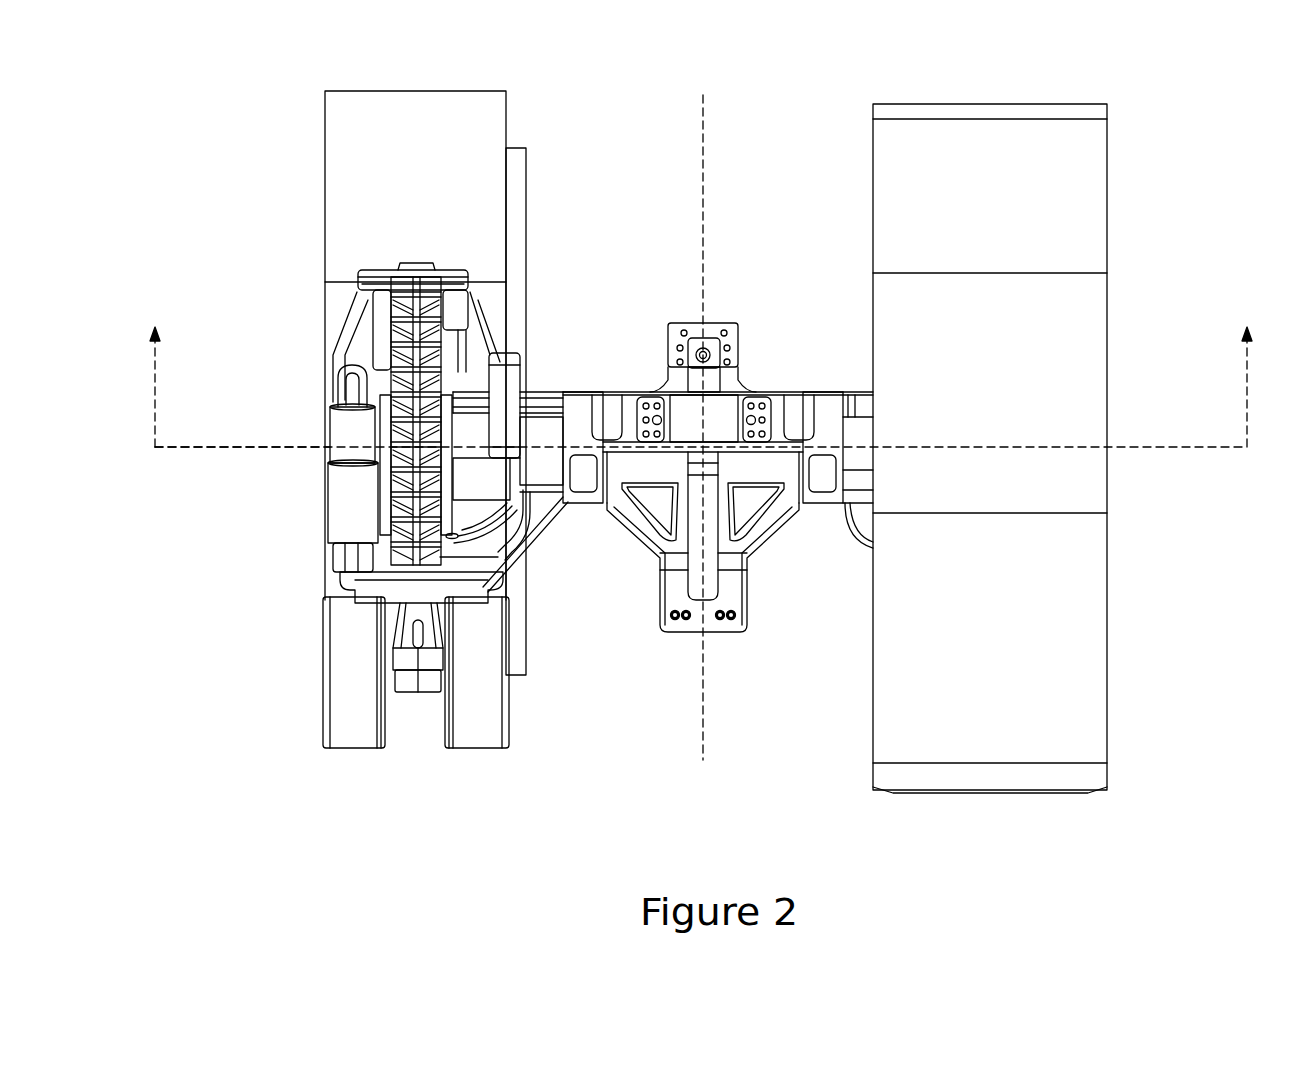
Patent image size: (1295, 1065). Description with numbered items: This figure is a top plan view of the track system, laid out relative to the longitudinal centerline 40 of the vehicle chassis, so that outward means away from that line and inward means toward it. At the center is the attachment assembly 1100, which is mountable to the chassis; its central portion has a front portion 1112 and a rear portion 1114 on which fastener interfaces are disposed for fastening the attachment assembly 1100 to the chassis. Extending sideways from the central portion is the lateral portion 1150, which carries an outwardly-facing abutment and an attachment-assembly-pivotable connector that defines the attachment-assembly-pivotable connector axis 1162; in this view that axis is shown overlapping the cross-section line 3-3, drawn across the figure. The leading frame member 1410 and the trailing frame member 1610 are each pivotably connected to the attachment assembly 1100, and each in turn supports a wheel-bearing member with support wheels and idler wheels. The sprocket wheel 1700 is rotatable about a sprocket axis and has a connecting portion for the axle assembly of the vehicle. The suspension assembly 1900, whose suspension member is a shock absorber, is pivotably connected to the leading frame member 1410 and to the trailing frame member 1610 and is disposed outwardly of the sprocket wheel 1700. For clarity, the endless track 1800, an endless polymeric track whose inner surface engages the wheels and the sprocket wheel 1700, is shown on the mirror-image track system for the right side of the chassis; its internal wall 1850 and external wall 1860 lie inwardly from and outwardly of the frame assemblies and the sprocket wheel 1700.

The cross-section line 3- 3 is at (701, 375).
The longitudinal centerline 40 is at (704, 128).
The attachment assembly 1100 is at (698, 633).
The front portion 1112 is at (660, 352).
The rear portion 1114 is at (660, 568).
The lateral portion 1150 is at (578, 392).
The attachment-assembly-pivotable connector axis 1162 is at (200, 446).
The leading frame member 1410 is at (467, 348).
The trailing frame member 1610 is at (525, 487).
The sprocket wheel 1700 is at (385, 376).
The endless track 1800 is at (958, 168).
The internal wall 1850 is at (873, 698).
The external wall 1860 is at (1107, 700).
The suspension assembly 1900 is at (357, 485).